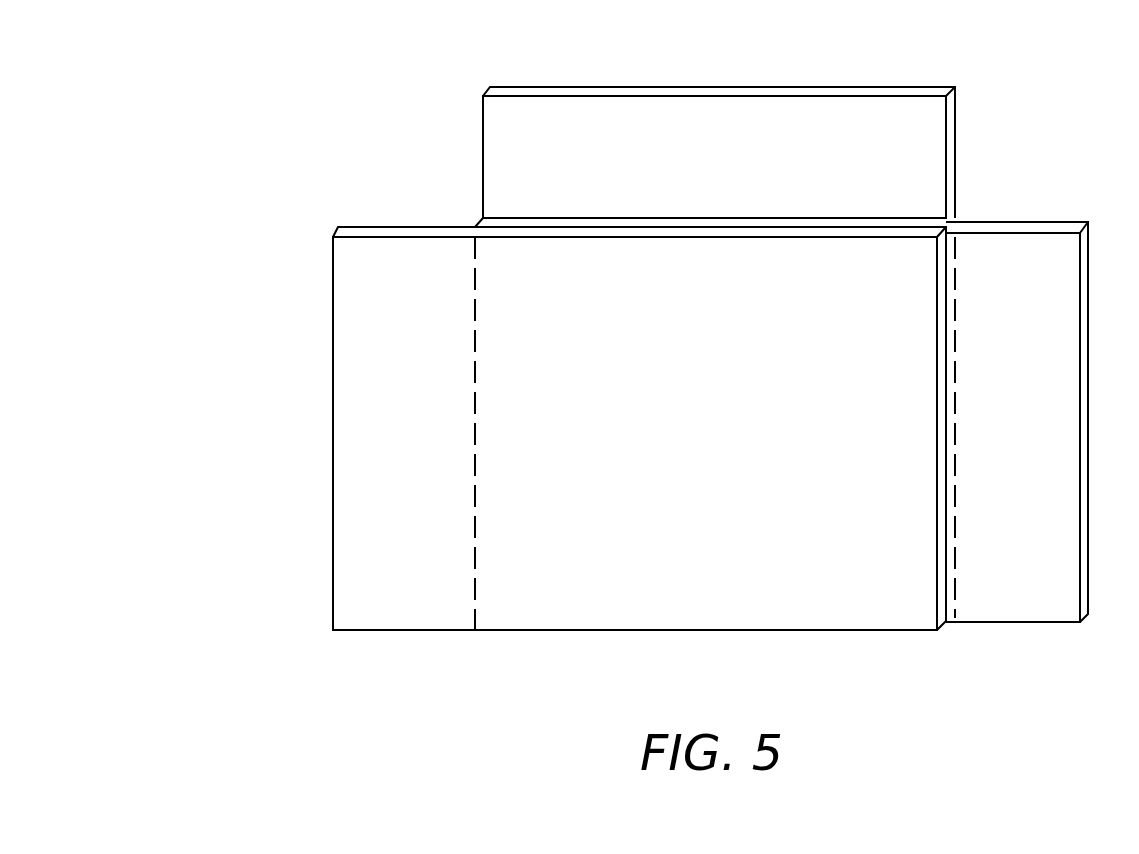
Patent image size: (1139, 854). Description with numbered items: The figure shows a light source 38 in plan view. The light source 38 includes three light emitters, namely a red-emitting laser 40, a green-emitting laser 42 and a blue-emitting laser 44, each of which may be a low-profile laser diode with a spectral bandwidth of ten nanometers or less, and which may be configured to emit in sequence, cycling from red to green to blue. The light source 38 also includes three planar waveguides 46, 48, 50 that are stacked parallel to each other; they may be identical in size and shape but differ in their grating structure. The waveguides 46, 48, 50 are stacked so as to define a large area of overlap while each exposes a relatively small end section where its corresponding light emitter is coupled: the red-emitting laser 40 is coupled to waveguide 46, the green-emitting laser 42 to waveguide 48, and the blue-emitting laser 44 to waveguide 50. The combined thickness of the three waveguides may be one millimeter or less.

The light source 38 is at (211, 119).
The red-emitting laser 40 is at (719, 152).
The green-emitting laser 42 is at (1017, 422).
The blue-emitting laser 44 is at (644, 424).
The planar waveguide 46 is at (561, 161).
The planar waveguide 48 is at (1035, 316).
The planar waveguide 50 is at (415, 323).